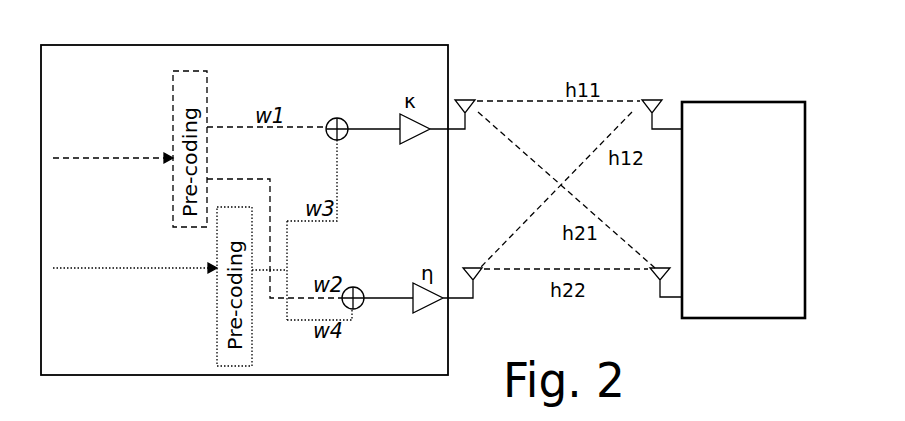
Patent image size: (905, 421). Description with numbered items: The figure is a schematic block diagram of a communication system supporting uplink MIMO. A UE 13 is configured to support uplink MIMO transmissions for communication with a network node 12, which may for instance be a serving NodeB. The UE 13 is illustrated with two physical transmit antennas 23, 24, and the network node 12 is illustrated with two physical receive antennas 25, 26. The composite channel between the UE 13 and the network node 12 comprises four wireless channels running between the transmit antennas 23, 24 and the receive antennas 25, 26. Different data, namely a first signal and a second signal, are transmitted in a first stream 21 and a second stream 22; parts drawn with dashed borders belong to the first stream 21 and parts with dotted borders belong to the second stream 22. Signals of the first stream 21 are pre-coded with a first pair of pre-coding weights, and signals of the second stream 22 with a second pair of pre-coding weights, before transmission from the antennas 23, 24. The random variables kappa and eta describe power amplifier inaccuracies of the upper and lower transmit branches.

The network node 12 is at (733, 100).
The UE 13 is at (378, 38).
The first stream 21 is at (143, 161).
The second stream 22 is at (163, 270).
The physical transmit antenna 23 is at (475, 94).
The physical transmit antenna 24 is at (473, 262).
The physical receive antenna 25 is at (650, 94).
The physical receive antenna 26 is at (650, 262).